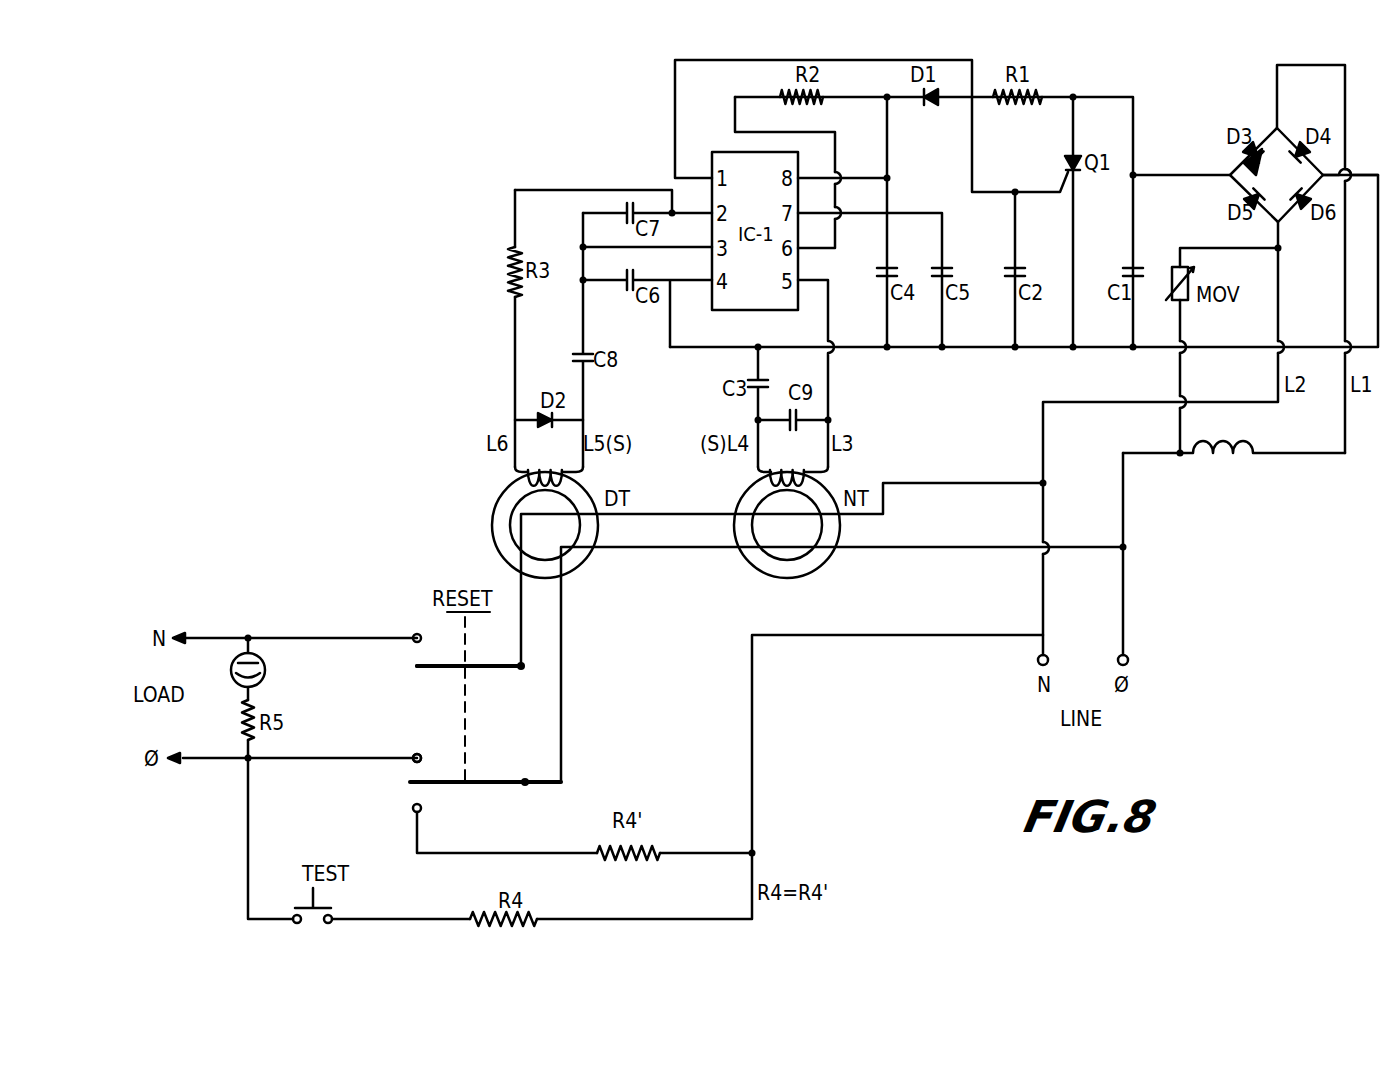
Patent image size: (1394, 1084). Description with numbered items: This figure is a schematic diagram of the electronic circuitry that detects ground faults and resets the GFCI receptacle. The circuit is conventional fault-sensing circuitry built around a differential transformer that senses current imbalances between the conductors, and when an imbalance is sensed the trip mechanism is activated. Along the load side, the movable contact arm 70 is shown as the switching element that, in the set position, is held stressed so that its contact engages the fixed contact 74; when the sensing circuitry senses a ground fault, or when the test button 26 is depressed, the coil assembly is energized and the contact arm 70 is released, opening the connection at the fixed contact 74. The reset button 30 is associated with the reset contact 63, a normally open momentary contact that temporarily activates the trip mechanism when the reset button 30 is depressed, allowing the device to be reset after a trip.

The reset button 30 is at (402, 592).
The fixed contact 74 is at (416, 754).
The reset contact 63 is at (413, 809).
The movable contact arm 70 is at (480, 784).
The test button 26 is at (344, 900).